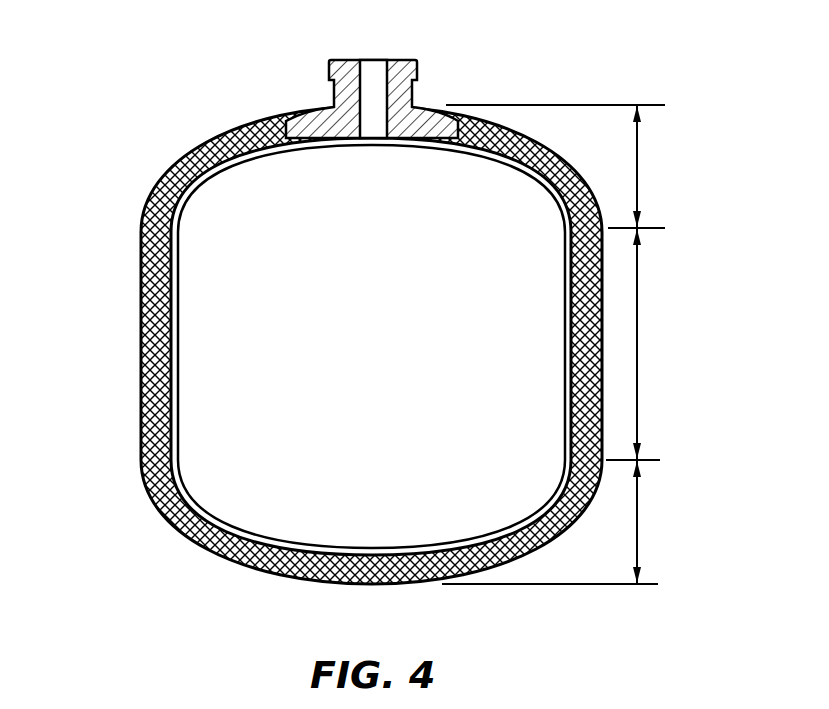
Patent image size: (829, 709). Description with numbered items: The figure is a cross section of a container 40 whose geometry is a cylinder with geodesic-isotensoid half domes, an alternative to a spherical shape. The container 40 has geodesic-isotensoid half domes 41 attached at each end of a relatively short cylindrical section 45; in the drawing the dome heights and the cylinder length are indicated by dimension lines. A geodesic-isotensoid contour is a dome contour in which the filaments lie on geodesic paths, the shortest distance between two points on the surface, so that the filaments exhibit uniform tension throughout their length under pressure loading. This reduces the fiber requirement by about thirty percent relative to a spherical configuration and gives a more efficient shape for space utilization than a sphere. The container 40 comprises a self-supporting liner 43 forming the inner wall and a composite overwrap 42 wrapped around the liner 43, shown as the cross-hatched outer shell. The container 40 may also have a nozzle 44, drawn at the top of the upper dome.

The container 40 is at (174, 99).
The geodesic-isotensoid half domes 41 is at (637, 166).
The composite overwrap 42 is at (161, 186).
The self-supporting liner 43 is at (178, 305).
The nozzle 44 is at (403, 62).
The cylindrical section 45 is at (637, 329).